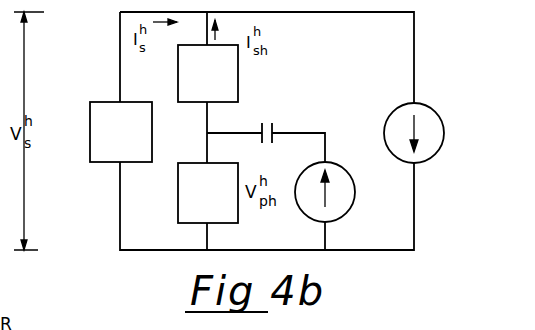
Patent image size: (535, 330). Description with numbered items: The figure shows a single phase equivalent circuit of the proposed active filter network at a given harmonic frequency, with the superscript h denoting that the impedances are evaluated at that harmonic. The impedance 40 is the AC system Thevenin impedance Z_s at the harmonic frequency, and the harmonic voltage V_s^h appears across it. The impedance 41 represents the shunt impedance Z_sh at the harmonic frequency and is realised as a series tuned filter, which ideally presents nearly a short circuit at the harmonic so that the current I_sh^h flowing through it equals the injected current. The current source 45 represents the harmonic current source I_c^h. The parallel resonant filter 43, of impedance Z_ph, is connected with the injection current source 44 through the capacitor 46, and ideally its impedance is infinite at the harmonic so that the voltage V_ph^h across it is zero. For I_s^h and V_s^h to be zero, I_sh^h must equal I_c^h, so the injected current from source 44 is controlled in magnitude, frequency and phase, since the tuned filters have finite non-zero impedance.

The impedance 40 is at (100, 162).
The impedance 41 is at (178, 76).
The parallel resonant filter 43 is at (178, 203).
The injection current source 44 is at (339, 164).
The current source 45 is at (400, 106).
The channel capacitor C_ch 46 is at (272, 140).